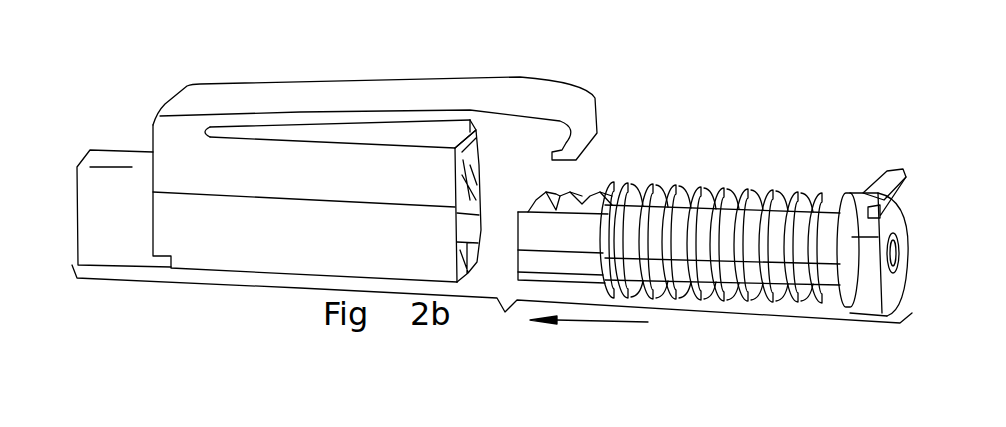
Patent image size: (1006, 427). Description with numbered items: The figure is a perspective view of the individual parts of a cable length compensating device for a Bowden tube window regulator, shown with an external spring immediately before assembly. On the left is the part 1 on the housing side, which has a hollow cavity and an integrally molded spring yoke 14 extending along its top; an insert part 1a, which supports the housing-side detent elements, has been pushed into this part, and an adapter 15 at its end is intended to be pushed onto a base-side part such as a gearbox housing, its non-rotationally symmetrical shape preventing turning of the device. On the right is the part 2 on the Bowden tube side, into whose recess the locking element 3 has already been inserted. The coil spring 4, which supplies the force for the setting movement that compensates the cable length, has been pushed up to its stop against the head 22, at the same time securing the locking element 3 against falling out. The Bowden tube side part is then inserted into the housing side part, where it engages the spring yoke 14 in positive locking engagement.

The part on the housing side 1 is at (268, 167).
The insert part 1a is at (482, 152).
The spring yoke 14 is at (403, 95).
The adapter 15 is at (104, 190).
The locking element 3 is at (577, 190).
The part on the Bowden tube side 2 is at (732, 235).
The coil spring 4 is at (792, 207).
The head 22 is at (888, 295).